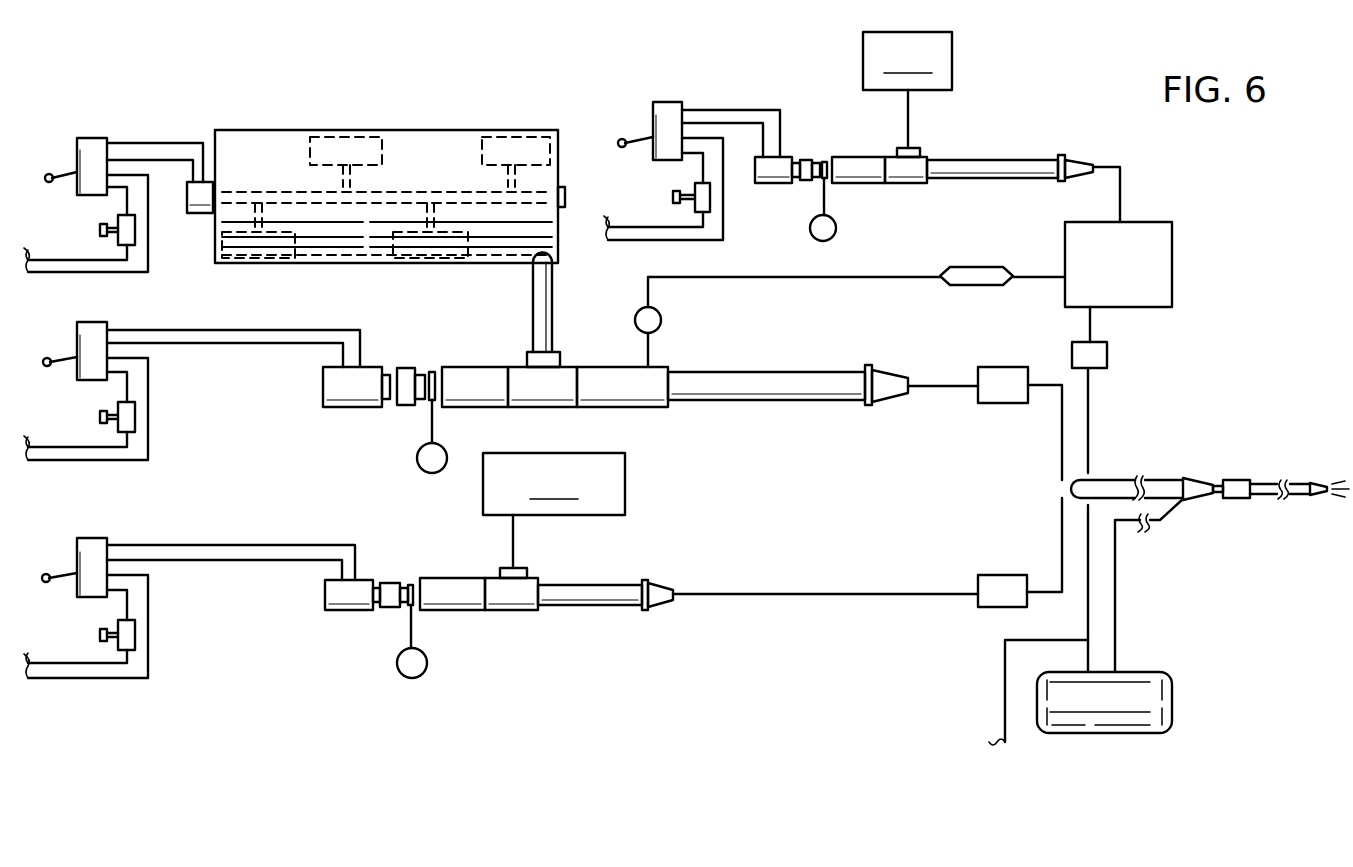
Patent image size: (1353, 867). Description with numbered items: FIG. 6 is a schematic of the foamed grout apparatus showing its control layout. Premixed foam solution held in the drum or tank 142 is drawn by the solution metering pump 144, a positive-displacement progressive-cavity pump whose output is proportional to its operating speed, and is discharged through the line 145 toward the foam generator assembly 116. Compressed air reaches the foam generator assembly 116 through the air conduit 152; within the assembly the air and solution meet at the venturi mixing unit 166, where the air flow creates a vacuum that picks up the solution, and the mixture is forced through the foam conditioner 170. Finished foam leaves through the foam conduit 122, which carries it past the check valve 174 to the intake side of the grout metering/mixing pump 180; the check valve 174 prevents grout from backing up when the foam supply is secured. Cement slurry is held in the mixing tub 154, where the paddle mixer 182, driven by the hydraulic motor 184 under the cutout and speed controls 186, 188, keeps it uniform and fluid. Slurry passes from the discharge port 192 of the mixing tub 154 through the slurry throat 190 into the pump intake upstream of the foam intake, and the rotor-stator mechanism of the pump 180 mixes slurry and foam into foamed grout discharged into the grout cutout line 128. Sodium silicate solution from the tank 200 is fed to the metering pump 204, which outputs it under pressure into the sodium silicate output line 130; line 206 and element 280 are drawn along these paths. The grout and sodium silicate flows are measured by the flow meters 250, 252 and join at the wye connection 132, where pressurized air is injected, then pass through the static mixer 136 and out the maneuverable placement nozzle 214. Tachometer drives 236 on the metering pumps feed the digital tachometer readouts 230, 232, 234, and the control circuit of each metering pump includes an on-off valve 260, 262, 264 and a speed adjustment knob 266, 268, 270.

The foam generator assembly 116 is at (1167, 255).
The foam conduit 122 is at (865, 277).
The grout cutout line 128 is at (923, 382).
The sodium silicate output line 130 is at (1062, 530).
The wye connection 132 is at (1190, 478).
The static mixer 136 is at (1237, 480).
The drum or tank 142 is at (907, 90).
The solution metering pump 144 is at (980, 162).
The line 145 is at (1120, 200).
The air conduit 152 is at (1005, 697).
The mixing tub 154 is at (390, 133).
The venturi mixing unit 166 is at (1133, 682).
The foam conditioner 170 is at (960, 267).
The check valve 174 is at (661, 320).
The grout metering/mixing pump 180 is at (765, 392).
The paddle mixer 182 is at (317, 130).
The hydraulic motor 184 is at (195, 215).
The cutout control 186 is at (90, 138).
The speed control 188 is at (100, 230).
The slurry throat 190 is at (542, 312).
The discharge port 192 is at (555, 258).
The tank 200 is at (554, 510).
The metering pump 204 is at (577, 603).
The line 206 is at (815, 595).
The placement nozzle 214 is at (1318, 483).
The tachometer readout 230 is at (417, 460).
The tachometer readout 232 is at (397, 662).
The tachometer readout 234 is at (810, 230).
The tachometer drive 236 is at (432, 372).
The flow meter 250 is at (998, 372).
The flow meter 252 is at (995, 607).
The on-off valve 260 is at (655, 110).
The on-off valve 262 is at (90, 538).
The on-off valve 264 is at (90, 322).
The speed adjustment knob 266 is at (673, 197).
The speed adjustment knob 268 is at (100, 635).
The speed adjustment knob 270 is at (100, 417).
The valve 280 is at (1107, 355).